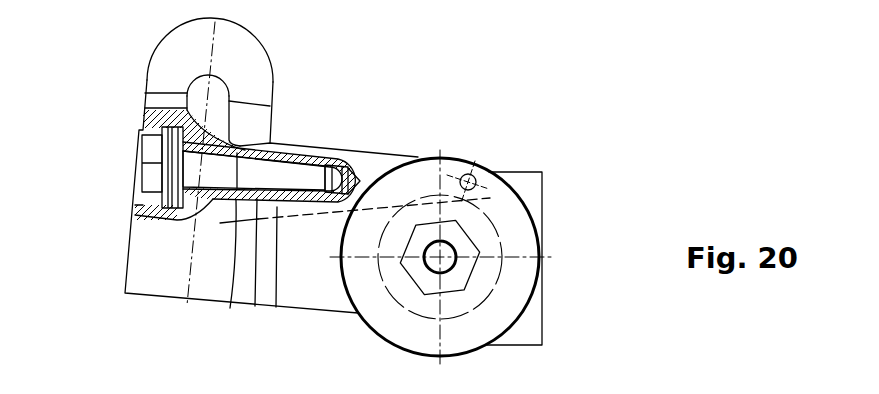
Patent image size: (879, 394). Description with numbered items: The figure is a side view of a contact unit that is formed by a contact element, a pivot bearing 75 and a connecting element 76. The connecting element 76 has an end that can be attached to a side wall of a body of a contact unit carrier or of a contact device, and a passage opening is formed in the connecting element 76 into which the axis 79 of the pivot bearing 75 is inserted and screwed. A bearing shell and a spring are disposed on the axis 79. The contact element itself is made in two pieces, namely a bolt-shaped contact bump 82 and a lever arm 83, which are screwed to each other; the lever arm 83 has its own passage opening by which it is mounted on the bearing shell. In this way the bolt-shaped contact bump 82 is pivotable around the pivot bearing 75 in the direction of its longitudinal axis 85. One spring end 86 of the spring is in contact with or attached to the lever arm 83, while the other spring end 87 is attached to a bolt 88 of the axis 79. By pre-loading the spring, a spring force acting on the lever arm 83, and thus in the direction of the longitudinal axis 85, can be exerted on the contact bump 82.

The bolt-shaped contact bump 82 is at (232, 68).
The longitudinal axis 85 is at (192, 250).
The spring end 86 is at (232, 310).
The lever arm 83 is at (292, 280).
The connecting element 76 is at (543, 173).
The axis 79 is at (520, 242).
The pivot bearing 75 is at (448, 264).
The spring end 87 is at (502, 200).
The bolt 88 is at (463, 175).